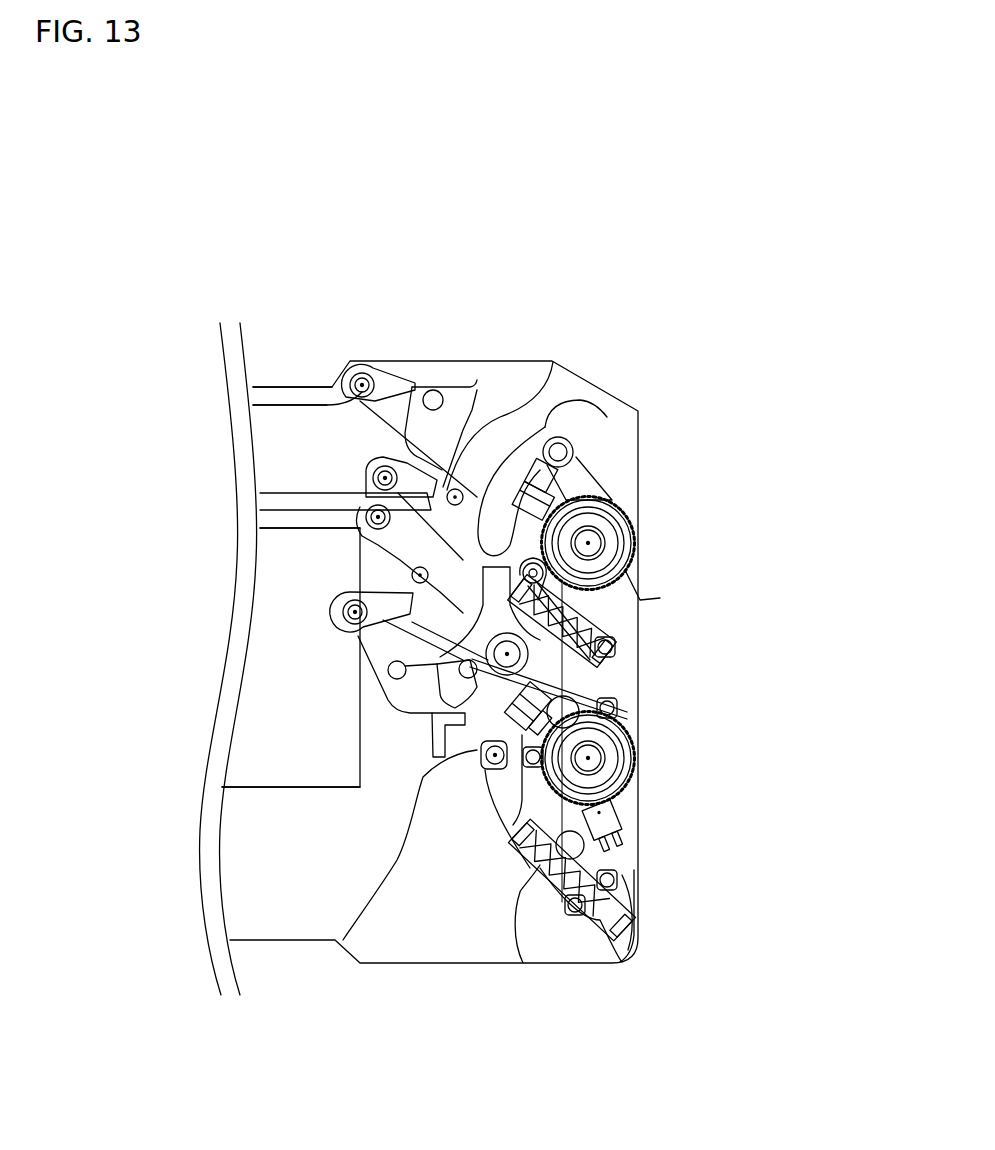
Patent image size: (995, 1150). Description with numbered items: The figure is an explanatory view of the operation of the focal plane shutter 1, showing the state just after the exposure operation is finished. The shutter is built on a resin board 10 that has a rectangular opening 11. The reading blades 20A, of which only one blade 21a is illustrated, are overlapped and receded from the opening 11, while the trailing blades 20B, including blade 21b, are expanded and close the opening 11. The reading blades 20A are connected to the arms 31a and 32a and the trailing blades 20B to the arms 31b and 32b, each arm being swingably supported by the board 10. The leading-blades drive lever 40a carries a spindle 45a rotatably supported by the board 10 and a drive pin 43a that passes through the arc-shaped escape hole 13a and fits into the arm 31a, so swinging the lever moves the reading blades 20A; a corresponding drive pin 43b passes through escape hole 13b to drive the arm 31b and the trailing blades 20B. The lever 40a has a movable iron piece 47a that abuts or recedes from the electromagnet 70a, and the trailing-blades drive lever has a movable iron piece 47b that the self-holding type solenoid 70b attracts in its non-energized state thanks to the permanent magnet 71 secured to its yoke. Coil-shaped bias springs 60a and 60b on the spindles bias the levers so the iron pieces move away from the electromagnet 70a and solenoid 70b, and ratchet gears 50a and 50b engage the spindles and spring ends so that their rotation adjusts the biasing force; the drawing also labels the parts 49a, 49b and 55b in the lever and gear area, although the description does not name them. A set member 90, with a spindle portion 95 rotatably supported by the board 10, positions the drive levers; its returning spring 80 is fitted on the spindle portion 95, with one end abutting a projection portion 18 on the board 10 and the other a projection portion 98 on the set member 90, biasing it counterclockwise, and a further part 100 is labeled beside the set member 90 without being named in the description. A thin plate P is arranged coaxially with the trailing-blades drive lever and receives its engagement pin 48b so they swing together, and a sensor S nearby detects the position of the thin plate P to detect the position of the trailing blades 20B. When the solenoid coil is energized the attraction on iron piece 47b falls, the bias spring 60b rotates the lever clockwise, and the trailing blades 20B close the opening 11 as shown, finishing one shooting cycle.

The focal plane shutter 1 is at (725, 575).
The board 10 is at (590, 967).
The opening 11 is at (267, 786).
The escape hole 13a is at (530, 462).
The escape hole 13b is at (515, 727).
The projection portion 18 is at (620, 708).
The reading blades 20A is at (298, 403).
The trailing blades 20B is at (292, 592).
The blade 21a is at (277, 428).
The blade 21b is at (278, 560).
The arm 31a is at (470, 388).
The arm 31b is at (370, 648).
The arm 32a is at (480, 427).
The arm 32b is at (352, 586).
The leading-blades drive lever 40a is at (586, 447).
The drive pin 43a is at (567, 440).
The drive pin 43b is at (483, 762).
The spindle 45a is at (610, 528).
The movable iron piece 47a is at (545, 440).
The movable iron piece 47b is at (488, 763).
The engagement pin 48b is at (625, 960).
The upper shaft 49a is at (608, 508).
The lower shaft 49b is at (598, 661).
The ratchet gear 50a is at (625, 573).
The ratchet gear 50b is at (630, 838).
The lower hub 55b is at (612, 763).
The bias spring 60a is at (622, 524).
The bias spring 60b is at (630, 777).
The electromagnet 70a is at (615, 638).
The self-holding type solenoid 70b is at (516, 877).
The permanent magnet 71 is at (638, 905).
The returning spring 80 is at (600, 688).
The set member 90 is at (421, 685).
The spindle portion 95 is at (432, 714).
The projection portion 98 is at (388, 670).
The stopper 100 is at (435, 745).
The thin plate P is at (617, 880).
The sensor S is at (627, 812).